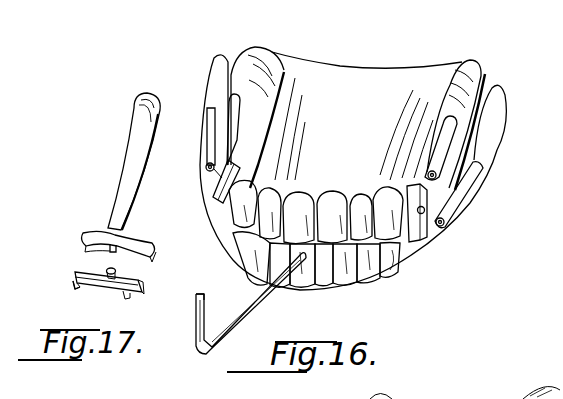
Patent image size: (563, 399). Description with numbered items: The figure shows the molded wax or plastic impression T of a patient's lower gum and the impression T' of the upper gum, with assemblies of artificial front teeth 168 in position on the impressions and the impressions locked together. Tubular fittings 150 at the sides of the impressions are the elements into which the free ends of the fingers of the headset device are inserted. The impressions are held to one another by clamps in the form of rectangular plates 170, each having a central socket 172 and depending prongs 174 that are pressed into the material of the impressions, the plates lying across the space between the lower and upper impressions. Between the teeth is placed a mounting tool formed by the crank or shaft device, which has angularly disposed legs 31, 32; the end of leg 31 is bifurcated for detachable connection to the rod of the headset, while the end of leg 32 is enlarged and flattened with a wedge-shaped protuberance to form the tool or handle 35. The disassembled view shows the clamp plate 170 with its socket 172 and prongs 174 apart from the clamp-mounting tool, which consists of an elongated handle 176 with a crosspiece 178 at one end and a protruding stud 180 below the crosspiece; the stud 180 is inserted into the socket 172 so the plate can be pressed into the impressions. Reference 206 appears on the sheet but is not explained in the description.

In FIG. 16, the leg 31 is at (194, 320).
In FIG. 16, the leg 32 is at (240, 325).
In FIG. 16, the tool or handle 35 is at (306, 290).
In FIG. 16, the tubular fittings 150 is at (450, 143).
In FIG. 16, the artificial front teeth 168 is at (337, 191).
In FIG. 17, the rectangular plates 170 is at (76, 276).
In FIG. 16, the rectangular plates 170 is at (213, 192).
In FIG. 17, the central socket 172 is at (117, 272).
In FIG. 17, the depending prongs 174 is at (77, 290).
In FIG. 17, the elongated handle 176 is at (147, 110).
In FIG. 17, the crosspiece 178 is at (104, 229).
In FIG. 17, the protruding stud 180 is at (97, 256).
In FIG. 16, the element of adjacent figure 206 is at (421, 398).
In FIG. 16, the impression of lower gum T is at (507, 183).
In FIG. 16, the impression of upper gum T' is at (491, 42).